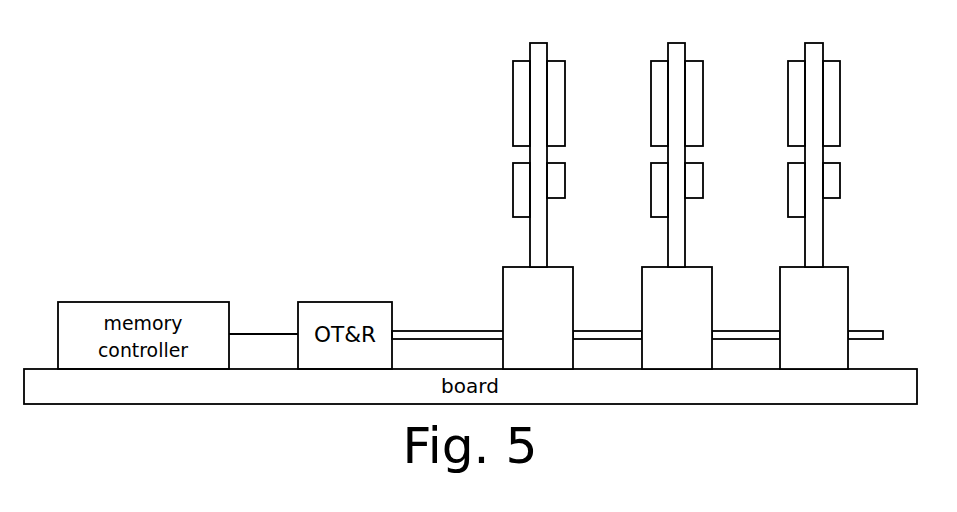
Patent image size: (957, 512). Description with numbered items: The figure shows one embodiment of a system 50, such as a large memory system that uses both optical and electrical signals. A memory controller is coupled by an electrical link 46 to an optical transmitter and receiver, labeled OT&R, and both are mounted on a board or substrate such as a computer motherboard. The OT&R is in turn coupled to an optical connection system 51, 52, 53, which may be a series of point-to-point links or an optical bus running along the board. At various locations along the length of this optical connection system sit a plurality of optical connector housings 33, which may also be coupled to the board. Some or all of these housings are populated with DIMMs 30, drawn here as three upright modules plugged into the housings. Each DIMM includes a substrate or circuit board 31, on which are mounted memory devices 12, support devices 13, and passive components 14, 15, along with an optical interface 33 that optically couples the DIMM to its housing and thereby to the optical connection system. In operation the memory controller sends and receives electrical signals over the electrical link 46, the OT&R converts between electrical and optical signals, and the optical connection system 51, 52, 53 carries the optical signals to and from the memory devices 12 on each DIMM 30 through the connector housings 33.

The memory devices 12 is at (513, 102).
The support devices 13 is at (565, 102).
The passive components 14 is at (513, 190).
The passive components 15 is at (565, 180).
The DIMMs 30 is at (657, 192).
The substrate 31 is at (538, 43).
The optical connector housings 33 is at (675, 318).
The electrical link 46 is at (281, 334).
The system 50 is at (740, 448).
The optical connection system 51 is at (455, 331).
The optical connection system 52 is at (630, 331).
The optical connection system 53 is at (768, 331).